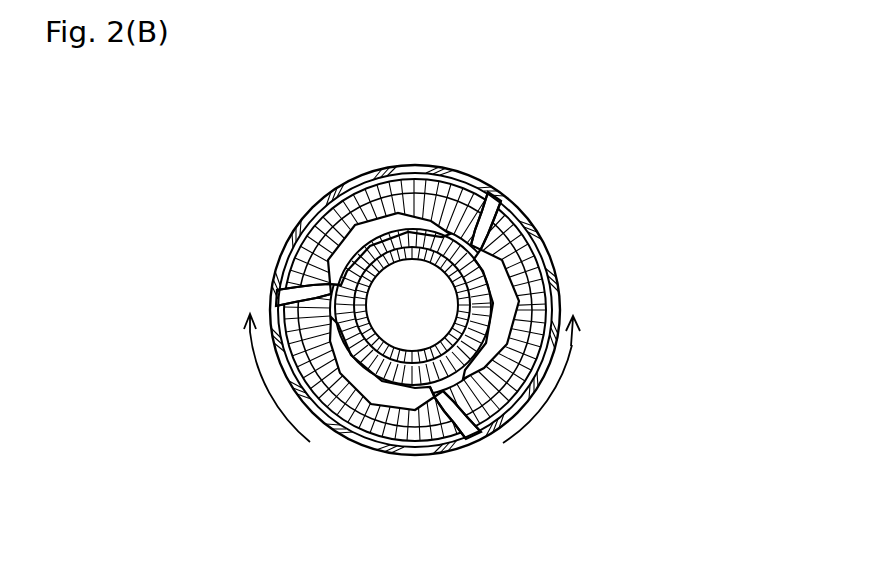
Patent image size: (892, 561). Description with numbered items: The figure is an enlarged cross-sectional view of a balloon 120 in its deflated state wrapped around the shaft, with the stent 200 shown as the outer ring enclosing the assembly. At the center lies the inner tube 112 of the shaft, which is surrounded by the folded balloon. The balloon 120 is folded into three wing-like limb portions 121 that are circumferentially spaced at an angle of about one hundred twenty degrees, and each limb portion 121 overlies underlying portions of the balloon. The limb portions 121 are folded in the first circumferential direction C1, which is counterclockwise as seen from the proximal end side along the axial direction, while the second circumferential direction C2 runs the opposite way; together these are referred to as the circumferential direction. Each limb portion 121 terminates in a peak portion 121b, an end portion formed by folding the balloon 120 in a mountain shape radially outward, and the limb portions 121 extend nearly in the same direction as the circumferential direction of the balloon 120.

The outer jacket / sheath 200 is at (428, 166).
The inner tube 112 is at (397, 250).
The balloon 120 is at (482, 214).
The limb portion 121 is at (451, 313).
The peak portion 121b is at (508, 200).
The first circumferential direction C1 is at (555, 369).
The second circumferential direction C2 is at (260, 368).